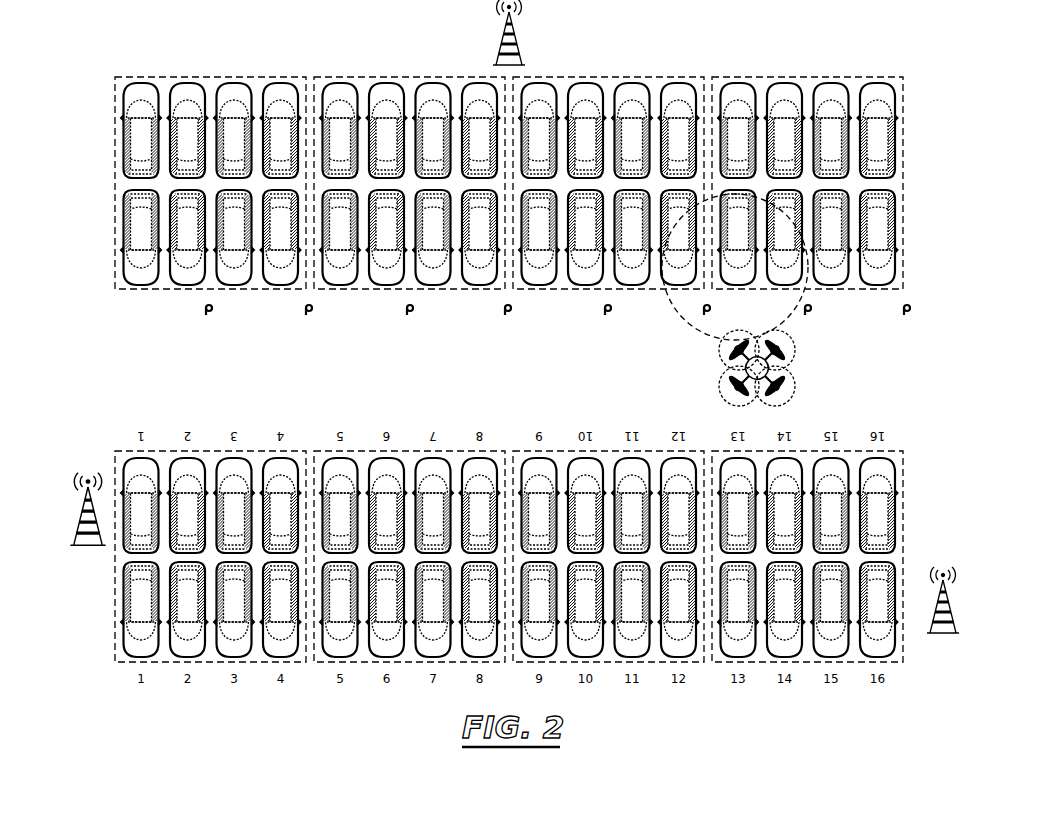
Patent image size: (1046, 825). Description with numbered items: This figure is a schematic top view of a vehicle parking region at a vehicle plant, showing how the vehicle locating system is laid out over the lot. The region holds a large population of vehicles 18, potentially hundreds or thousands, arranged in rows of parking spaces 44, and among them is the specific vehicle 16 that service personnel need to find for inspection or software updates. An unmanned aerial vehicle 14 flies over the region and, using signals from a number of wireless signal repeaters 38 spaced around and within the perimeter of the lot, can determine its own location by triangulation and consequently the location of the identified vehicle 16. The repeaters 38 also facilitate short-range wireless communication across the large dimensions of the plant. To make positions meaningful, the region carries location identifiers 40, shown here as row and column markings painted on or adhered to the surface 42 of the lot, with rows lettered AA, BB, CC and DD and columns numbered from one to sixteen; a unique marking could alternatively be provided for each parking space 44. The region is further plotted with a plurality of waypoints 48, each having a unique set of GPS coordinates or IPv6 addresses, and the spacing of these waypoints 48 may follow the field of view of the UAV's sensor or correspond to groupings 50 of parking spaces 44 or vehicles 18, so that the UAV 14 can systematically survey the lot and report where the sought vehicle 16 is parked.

The unmanned aerial vehicle 14 is at (805, 386).
The vehicle 16 is at (346, 282).
The vehicles 18 is at (806, 57).
The wireless signal repeater 38 is at (517, 43).
The location identifier 40 is at (931, 145).
The surface 42 is at (143, 350).
The parking space 44 is at (225, 457).
The waypoint 48 is at (208, 315).
The grouping 50 is at (366, 76).